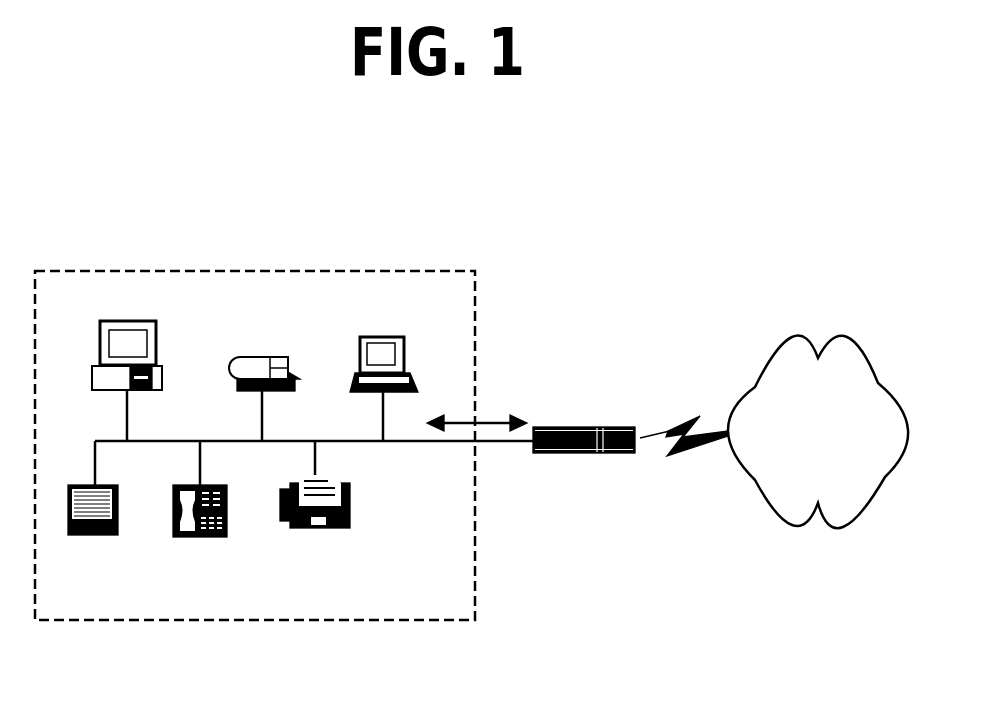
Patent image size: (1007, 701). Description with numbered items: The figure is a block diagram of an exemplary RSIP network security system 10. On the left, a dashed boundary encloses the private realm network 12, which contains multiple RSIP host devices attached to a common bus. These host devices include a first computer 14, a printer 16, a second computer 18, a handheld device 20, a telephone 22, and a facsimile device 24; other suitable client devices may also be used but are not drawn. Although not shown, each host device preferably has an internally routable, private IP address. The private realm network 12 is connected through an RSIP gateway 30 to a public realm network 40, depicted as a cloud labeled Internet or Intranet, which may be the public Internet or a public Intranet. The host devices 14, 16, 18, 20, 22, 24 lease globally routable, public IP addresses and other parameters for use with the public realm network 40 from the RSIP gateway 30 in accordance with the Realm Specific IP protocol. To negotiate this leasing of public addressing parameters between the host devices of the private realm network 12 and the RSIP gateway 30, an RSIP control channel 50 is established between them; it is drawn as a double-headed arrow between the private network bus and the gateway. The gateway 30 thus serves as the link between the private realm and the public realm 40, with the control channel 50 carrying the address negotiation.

The RSIP network security system 10 is at (616, 217).
The private realm network 12 is at (475, 602).
The computer 14 is at (163, 372).
The printer 16 is at (300, 382).
The computer 18 is at (408, 365).
The handheld device 20 is at (118, 510).
The telephone 22 is at (227, 510).
The facsimile device 24 is at (348, 500).
The RSIP gateway 30 is at (562, 427).
The public realm network 40 is at (790, 525).
The RSIP control channel 50 is at (490, 421).